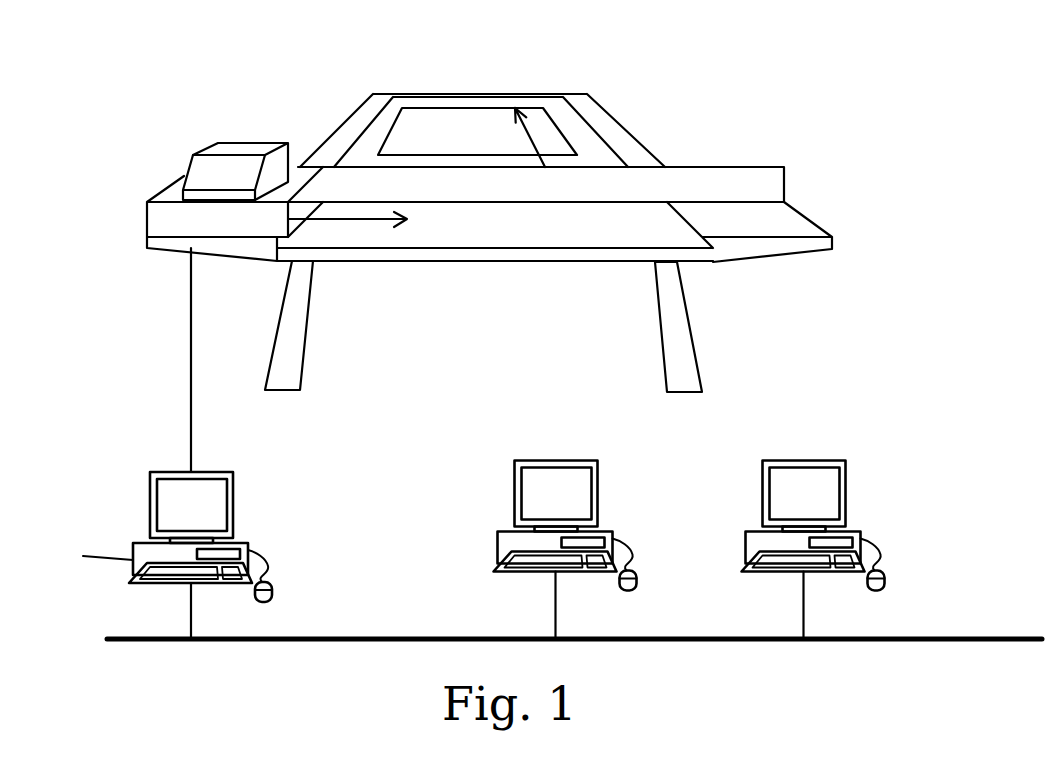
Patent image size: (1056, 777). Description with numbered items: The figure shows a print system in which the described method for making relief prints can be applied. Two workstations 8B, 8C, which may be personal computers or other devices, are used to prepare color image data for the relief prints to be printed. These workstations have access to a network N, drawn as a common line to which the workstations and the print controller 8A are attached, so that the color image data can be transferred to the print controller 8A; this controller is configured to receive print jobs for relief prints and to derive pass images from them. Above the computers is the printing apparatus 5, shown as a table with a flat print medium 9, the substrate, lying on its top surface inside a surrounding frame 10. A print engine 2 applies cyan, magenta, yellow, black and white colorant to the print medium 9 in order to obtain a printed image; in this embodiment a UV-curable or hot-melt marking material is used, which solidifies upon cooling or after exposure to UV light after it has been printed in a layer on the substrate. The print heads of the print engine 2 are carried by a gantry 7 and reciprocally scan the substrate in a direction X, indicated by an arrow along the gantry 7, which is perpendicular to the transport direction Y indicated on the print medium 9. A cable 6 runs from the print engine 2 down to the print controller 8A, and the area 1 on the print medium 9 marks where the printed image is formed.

The print medium on platen 1 is at (408, 140).
The print engine 2 is at (207, 146).
The printing apparatus 5 is at (875, 260).
The cable 6 is at (195, 402).
The gantry 7 is at (729, 178).
The print controller 8A is at (243, 550).
The workstation 8B is at (608, 539).
The workstation 8C is at (855, 539).
The print medium 9 is at (437, 117).
The table frame 10 is at (318, 155).
The network N is at (1008, 638).
The direction X is at (342, 219).
The transport direction Y is at (527, 136).